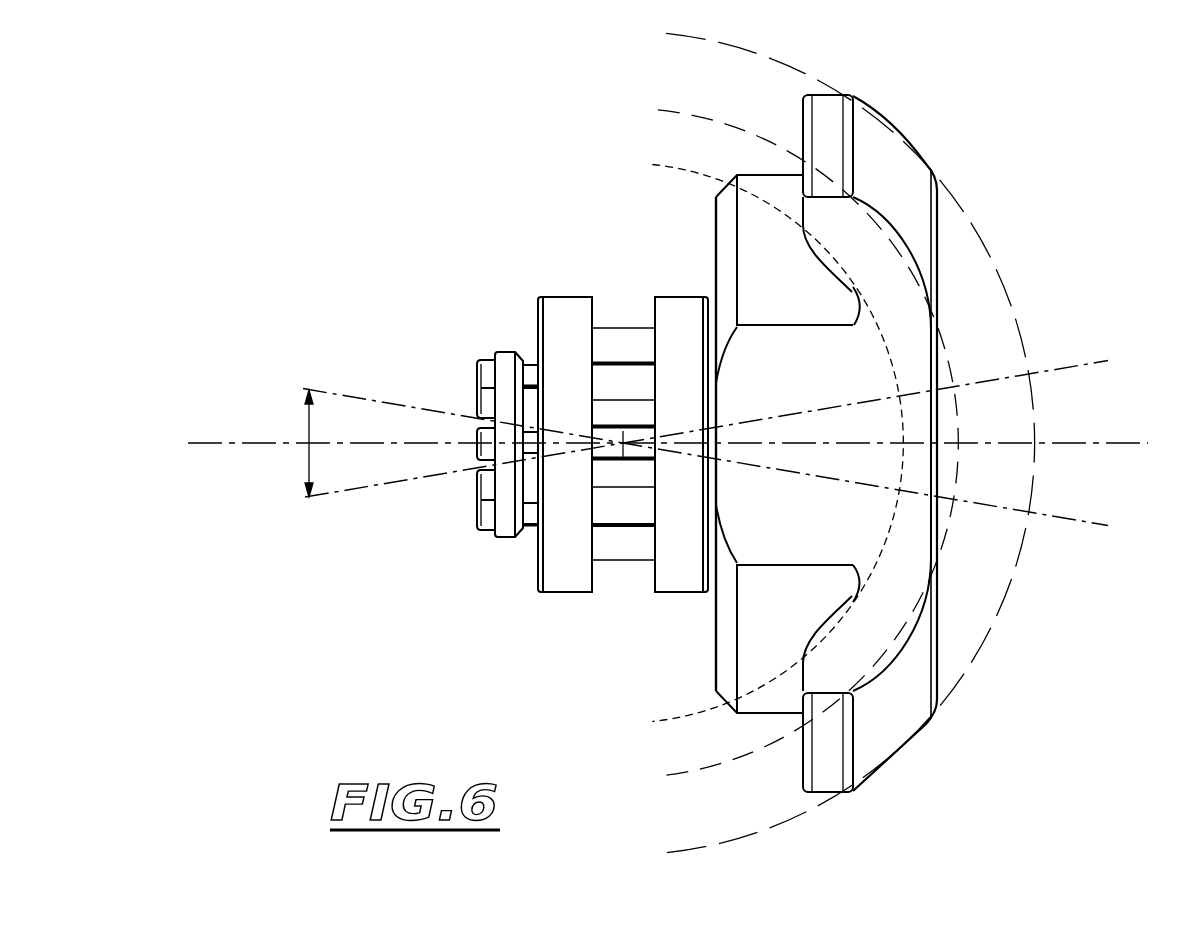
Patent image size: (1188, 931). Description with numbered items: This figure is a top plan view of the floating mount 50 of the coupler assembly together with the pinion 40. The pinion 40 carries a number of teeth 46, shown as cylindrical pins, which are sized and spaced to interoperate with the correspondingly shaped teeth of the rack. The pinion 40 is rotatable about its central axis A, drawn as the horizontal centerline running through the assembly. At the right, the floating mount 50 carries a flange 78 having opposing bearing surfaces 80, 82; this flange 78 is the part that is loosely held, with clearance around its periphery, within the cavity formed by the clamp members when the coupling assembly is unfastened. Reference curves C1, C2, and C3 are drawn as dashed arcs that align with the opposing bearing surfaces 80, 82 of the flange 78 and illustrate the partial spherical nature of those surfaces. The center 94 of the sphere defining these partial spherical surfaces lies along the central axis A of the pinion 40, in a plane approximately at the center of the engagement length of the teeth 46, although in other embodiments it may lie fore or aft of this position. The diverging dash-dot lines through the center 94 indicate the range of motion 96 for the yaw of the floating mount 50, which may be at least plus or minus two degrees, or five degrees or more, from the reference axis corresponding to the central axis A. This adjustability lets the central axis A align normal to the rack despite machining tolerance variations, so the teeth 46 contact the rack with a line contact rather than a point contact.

The pinion 40 is at (565, 297).
The teeth 46 is at (628, 327).
The floating mount 50 is at (755, 183).
The flange 78 is at (822, 770).
The bearing surface 80 is at (823, 247).
The bearing surface 82 is at (886, 156).
The center 94 is at (618, 447).
The range of motion 96 is at (308, 432).
The central axis A is at (1129, 443).
The reference curve C1 is at (683, 171).
The reference curve C2 is at (680, 111).
The reference curve C3 is at (682, 35).